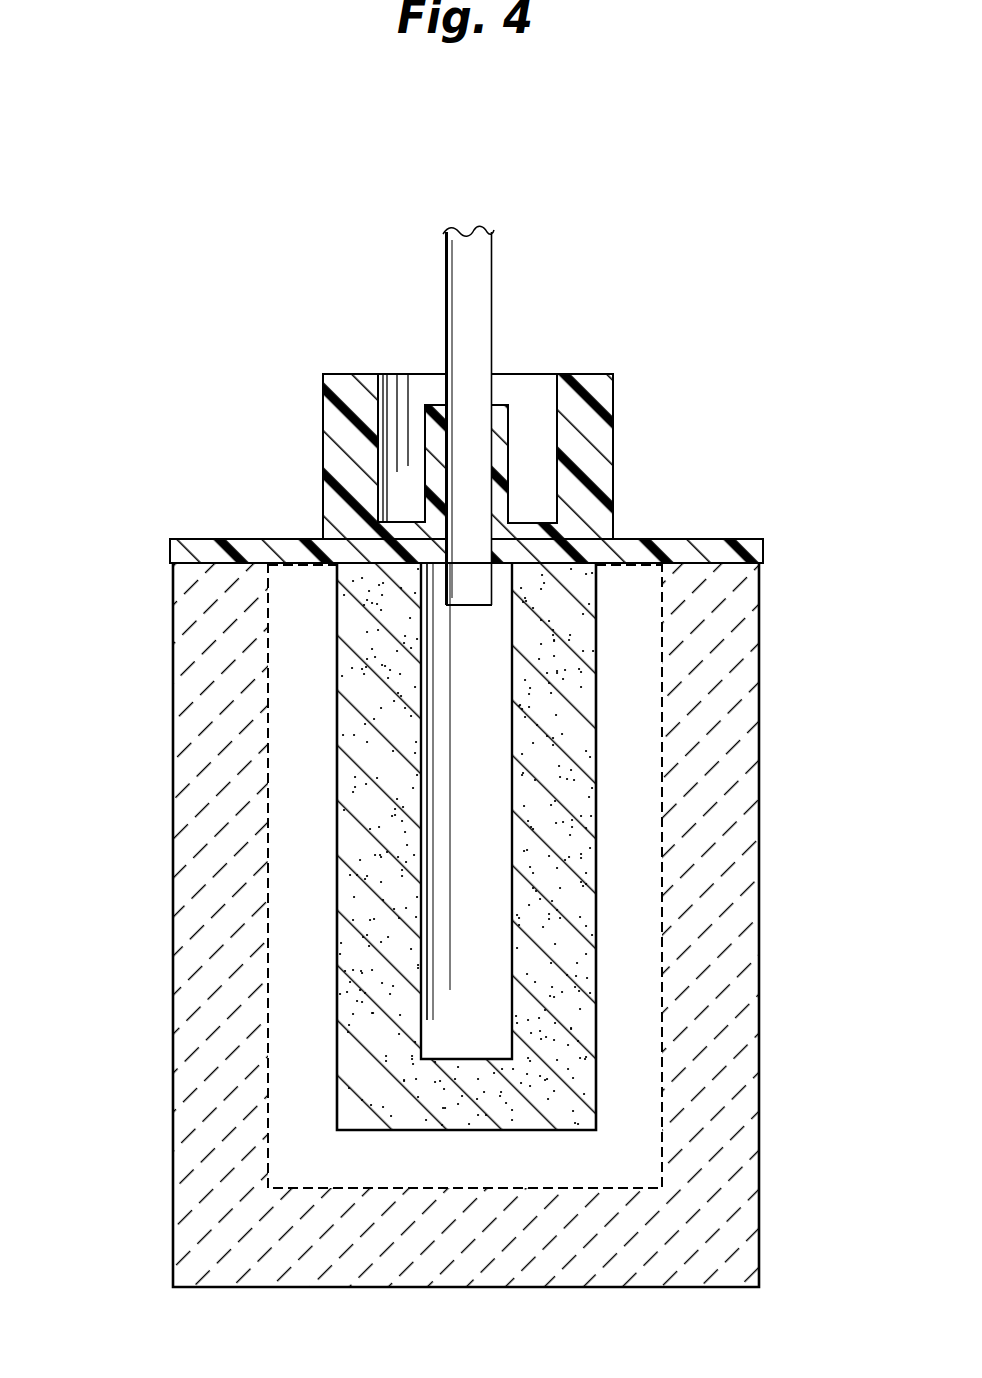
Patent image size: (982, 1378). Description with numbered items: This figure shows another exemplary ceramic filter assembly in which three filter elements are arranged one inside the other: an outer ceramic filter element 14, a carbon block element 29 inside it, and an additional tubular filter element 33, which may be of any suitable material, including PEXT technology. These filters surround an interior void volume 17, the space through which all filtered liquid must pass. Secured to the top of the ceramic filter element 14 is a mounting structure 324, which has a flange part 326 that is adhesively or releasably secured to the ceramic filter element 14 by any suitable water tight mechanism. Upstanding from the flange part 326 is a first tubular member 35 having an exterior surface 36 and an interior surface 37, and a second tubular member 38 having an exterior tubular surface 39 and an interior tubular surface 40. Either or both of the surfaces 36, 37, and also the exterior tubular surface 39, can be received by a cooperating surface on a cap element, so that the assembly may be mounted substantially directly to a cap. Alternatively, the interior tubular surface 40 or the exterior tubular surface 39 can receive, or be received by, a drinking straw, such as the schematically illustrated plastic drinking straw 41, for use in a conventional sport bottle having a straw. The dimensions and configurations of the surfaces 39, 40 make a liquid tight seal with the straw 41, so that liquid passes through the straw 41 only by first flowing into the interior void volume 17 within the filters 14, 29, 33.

The ceramic filter element 14 is at (222, 838).
The interior void volume 17 is at (473, 853).
The carbon block element 29 is at (542, 1035).
The tubular filter element 33 is at (307, 642).
The first tubular member 35 is at (583, 376).
The exterior surface 36 is at (613, 425).
The interior surface 37 is at (553, 428).
The second tubular member 38 is at (436, 403).
The exterior tubular surface 39 is at (433, 474).
The interior tubular surface 40 is at (487, 457).
The plastic drinking straw 41 is at (477, 268).
The mounting structure 324 is at (668, 440).
The flange part 326 is at (683, 540).